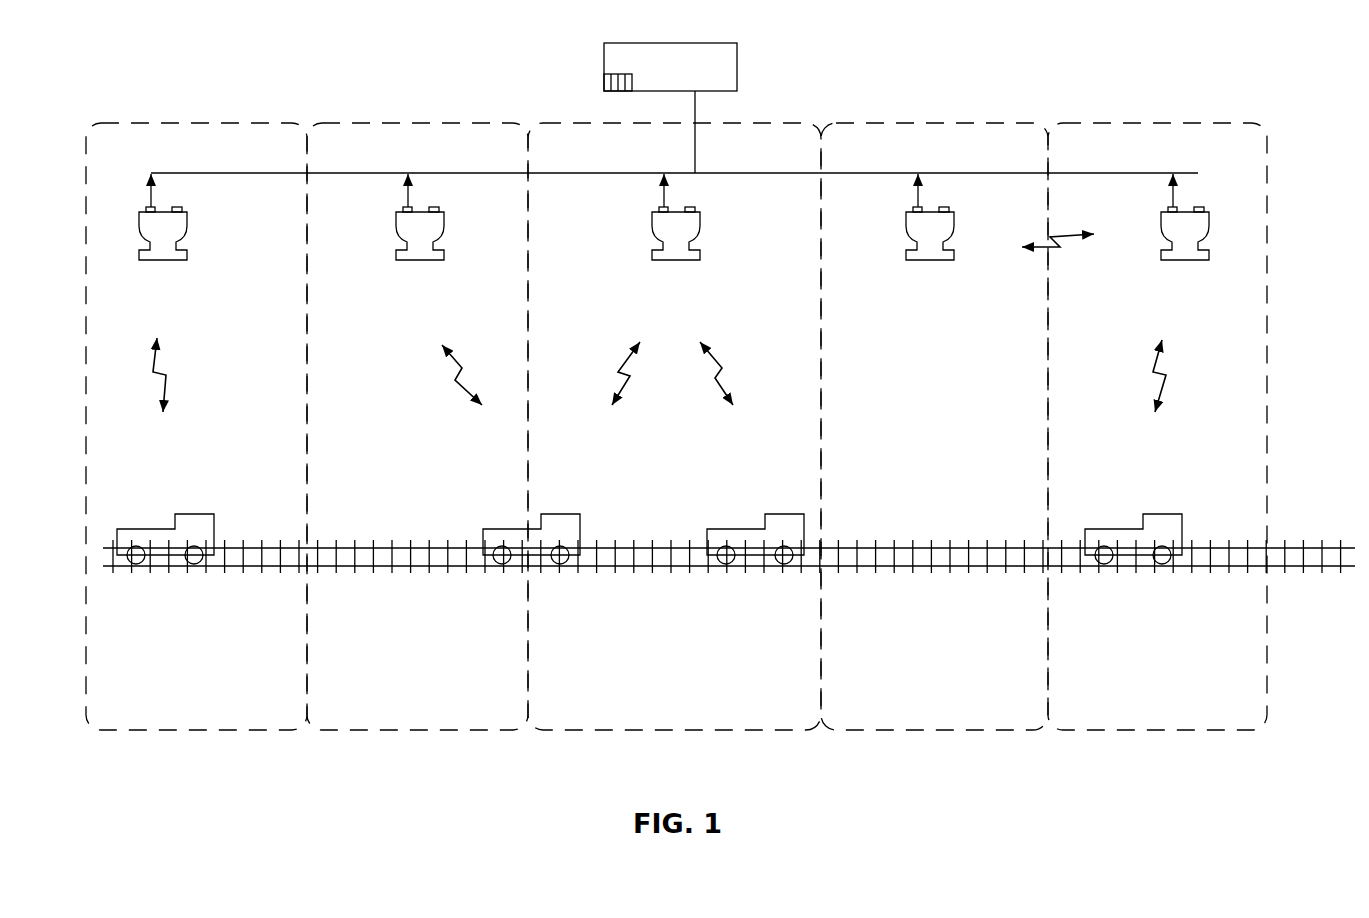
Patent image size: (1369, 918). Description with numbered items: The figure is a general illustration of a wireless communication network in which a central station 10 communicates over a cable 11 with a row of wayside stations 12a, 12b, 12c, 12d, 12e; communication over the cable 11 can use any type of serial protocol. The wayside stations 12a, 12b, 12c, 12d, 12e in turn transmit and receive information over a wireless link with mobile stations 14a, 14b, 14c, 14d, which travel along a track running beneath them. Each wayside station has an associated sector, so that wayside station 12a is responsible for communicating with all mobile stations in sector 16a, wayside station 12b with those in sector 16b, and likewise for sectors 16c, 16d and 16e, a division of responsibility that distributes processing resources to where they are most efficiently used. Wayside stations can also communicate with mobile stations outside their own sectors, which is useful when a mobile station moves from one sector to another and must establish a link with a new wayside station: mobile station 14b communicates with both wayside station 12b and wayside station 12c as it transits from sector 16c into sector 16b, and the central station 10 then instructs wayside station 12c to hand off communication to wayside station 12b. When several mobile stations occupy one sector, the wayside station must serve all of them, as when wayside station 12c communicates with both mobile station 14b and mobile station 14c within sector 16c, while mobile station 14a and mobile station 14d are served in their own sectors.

The central station 10 is at (604, 70).
The cable 11 is at (745, 173).
The wayside station 12a is at (188, 255).
The wayside station 12b is at (396, 256).
The wayside station 12c is at (652, 256).
The wayside station 12d is at (906, 256).
The wayside station 12e is at (1161, 256).
The mobile station 14a is at (167, 528).
The mobile station 14b is at (514, 528).
The mobile station 14c is at (741, 528).
The mobile station 14d is at (1120, 528).
The sector 16a is at (180, 669).
The sector 16b is at (437, 669).
The sector 16c is at (693, 669).
The sector 16d is at (948, 669).
The sector 16e is at (1203, 669).